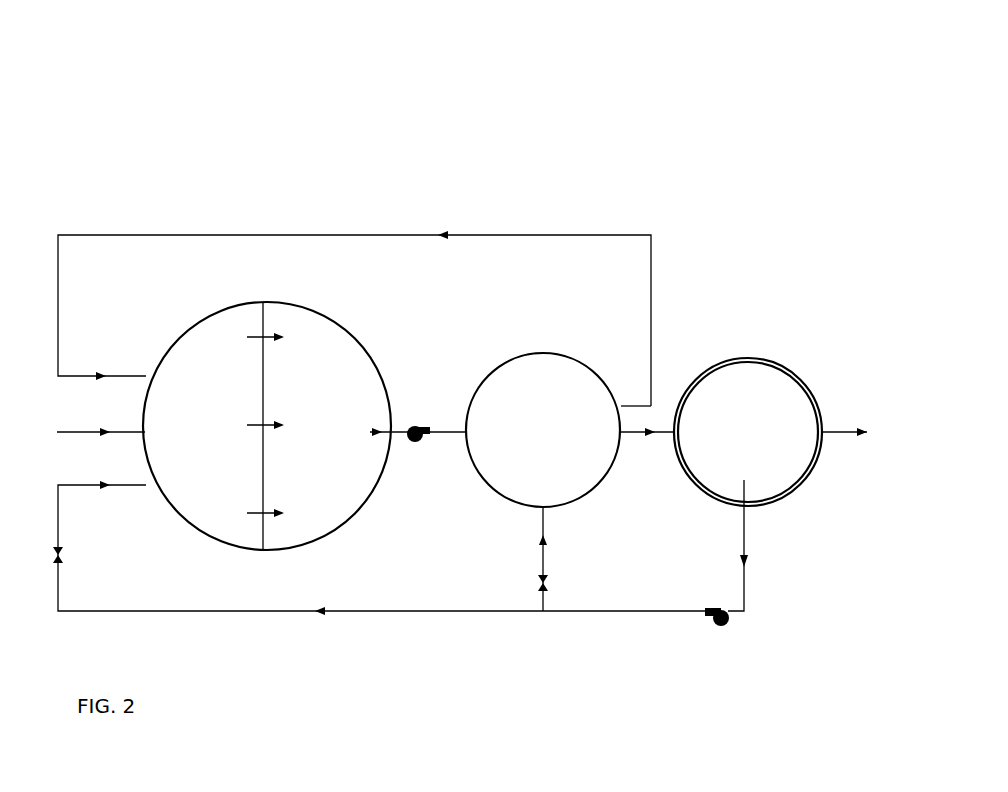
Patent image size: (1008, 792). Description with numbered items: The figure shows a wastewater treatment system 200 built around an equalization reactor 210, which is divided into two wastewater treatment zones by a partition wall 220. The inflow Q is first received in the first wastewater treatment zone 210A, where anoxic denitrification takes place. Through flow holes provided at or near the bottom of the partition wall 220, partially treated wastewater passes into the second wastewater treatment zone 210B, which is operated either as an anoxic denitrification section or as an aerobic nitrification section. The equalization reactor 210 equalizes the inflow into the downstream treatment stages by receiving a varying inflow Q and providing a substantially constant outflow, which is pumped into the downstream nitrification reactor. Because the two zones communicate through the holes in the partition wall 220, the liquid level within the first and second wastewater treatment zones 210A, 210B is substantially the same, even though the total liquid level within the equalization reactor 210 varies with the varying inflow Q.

The wastewater treatment system 200 is at (668, 192).
The equalization reactor 210 is at (343, 325).
The partition wall 220 is at (262, 318).
The first wastewater treatment zone 210A is at (201, 426).
The second wastewater treatment zone 210B is at (325, 426).